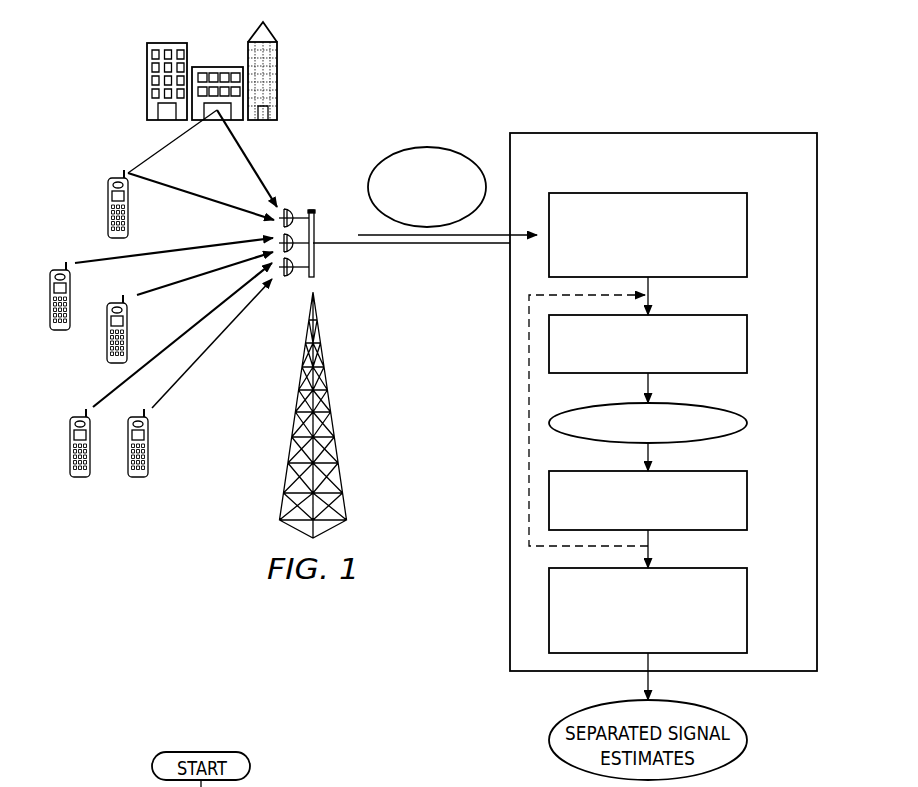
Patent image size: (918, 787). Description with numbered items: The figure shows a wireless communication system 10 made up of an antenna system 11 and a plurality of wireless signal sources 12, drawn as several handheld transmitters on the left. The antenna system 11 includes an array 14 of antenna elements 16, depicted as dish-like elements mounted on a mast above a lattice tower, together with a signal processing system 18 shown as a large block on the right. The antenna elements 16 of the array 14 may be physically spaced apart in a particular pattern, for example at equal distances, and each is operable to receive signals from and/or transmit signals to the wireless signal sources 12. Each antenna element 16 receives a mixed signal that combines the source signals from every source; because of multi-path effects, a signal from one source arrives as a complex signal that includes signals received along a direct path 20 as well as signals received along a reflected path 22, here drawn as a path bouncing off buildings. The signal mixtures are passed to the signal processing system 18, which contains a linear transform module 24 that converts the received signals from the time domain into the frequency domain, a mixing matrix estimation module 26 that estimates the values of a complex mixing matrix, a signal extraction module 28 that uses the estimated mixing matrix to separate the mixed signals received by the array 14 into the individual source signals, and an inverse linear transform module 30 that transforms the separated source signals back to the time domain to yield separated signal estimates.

The wireless communication system 10 is at (107, 82).
The antenna system 11 is at (560, 74).
The wireless signal sources 12 is at (106, 193).
The array 14 is at (291, 298).
The antenna elements 16 is at (289, 212).
The signal processing system 18 is at (686, 131).
The direct path 20 is at (190, 193).
The reflected path 22 is at (155, 153).
The linear transform module 24 is at (748, 232).
The mixing matrix estimation module 26 is at (748, 342).
The signal extraction module 28 is at (748, 503).
The inverse linear transform module 30 is at (748, 613).